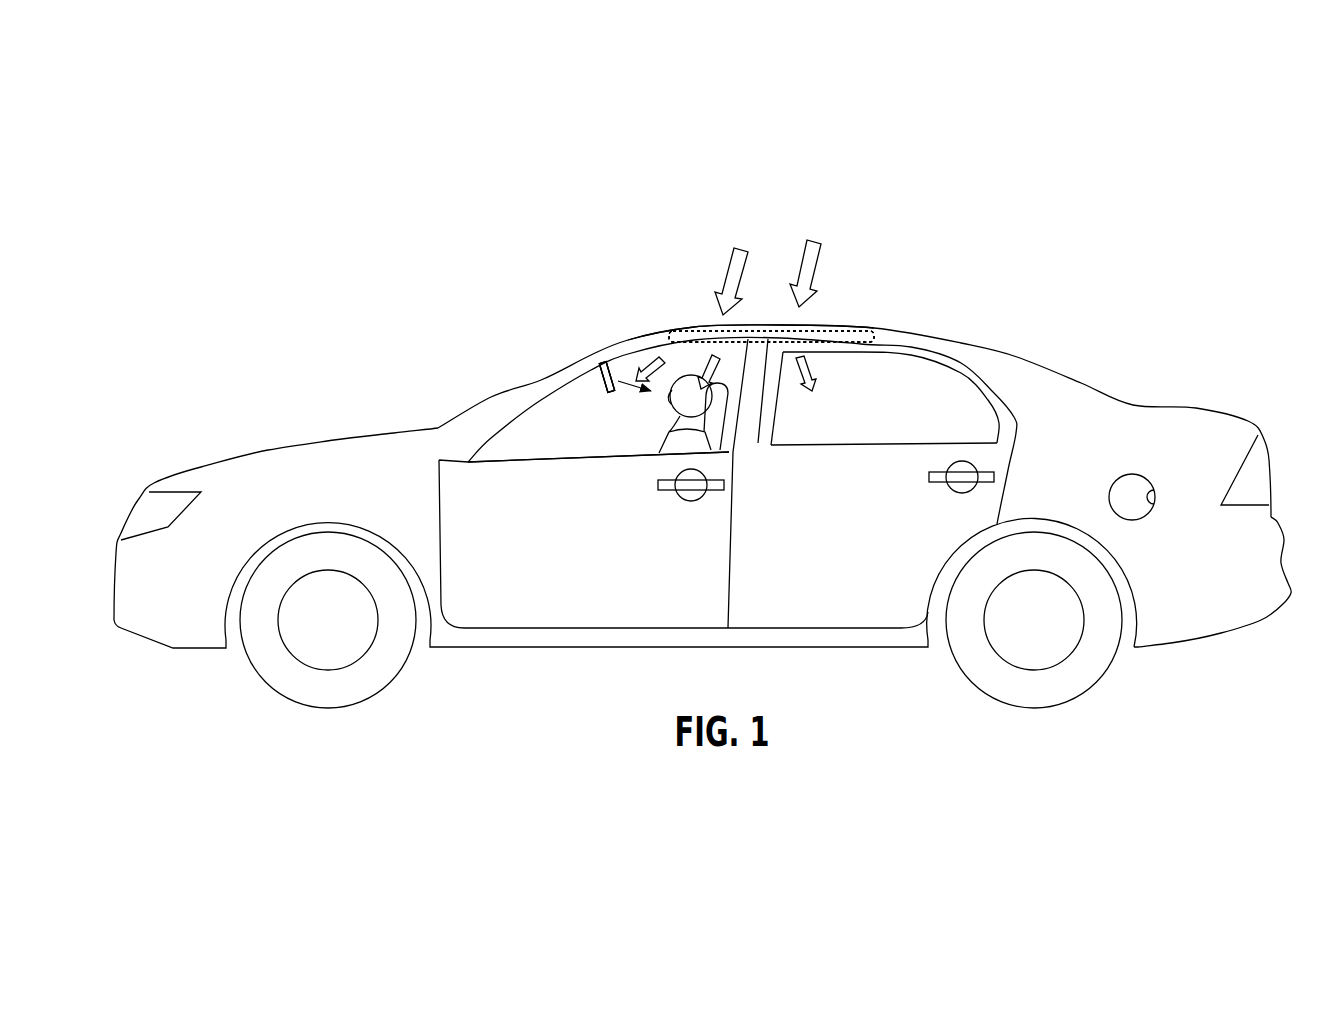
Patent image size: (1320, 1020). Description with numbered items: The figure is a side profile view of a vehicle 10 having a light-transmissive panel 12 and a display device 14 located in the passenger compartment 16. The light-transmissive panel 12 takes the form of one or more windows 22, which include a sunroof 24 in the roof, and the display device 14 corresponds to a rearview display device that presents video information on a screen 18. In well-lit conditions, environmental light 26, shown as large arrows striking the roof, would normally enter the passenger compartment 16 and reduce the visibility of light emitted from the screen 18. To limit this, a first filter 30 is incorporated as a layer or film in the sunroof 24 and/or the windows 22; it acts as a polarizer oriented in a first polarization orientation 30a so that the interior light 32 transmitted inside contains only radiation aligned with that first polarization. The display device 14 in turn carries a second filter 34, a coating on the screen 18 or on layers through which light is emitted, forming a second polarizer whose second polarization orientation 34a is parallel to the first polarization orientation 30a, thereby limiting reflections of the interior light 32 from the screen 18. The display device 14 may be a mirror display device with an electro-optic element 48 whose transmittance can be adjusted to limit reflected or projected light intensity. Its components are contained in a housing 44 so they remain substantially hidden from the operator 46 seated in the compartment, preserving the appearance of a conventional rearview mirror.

The vehicle 10 is at (373, 169).
The light-transmissive panel 12 is at (830, 307).
The windows 22 is at (742, 430).
The display device 14 is at (640, 382).
The housing 44 is at (885, 398).
The passenger compartment 16 is at (530, 422).
The screen 18 is at (620, 342).
The sunroof 24 is at (685, 329).
The first filter 30 is at (771, 336).
The first polarization orientation 30a is at (771, 336).
The environmental light 26 is at (800, 252).
The interior light 32 is at (638, 364).
The second filter 34 is at (595, 359).
The second polarization orientation 34a is at (606, 377).
The operator 46 is at (671, 409).
The electro-optic element 48 is at (598, 354).